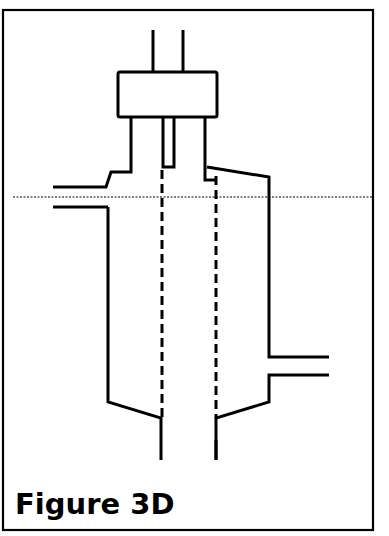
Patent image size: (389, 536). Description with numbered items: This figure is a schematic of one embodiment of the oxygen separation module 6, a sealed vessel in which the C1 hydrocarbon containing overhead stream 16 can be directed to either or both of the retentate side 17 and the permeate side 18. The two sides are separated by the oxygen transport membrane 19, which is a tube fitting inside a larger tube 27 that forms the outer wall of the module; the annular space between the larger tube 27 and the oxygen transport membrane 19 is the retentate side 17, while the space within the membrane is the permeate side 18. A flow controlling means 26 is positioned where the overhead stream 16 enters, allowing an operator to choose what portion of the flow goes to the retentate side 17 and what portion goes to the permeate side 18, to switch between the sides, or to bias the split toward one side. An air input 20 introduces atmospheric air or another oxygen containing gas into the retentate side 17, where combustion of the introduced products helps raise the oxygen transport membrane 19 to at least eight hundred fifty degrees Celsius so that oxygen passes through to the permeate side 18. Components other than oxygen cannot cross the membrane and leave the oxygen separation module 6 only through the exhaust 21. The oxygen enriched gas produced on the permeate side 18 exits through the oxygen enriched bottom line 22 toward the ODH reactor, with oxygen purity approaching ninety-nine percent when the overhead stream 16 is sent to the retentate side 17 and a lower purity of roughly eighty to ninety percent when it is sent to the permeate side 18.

The overhead stream 16 is at (152, 53).
The flow controlling means 26 is at (219, 106).
The air input 20 is at (92, 162).
The larger tube 27 is at (271, 221).
The oxygen transport membrane 19 is at (270, 267).
The exhaust 21 is at (275, 417).
The oxygen separation module 6 is at (85, 309).
The retentate side 17 is at (148, 267).
The permeate side 18 is at (268, 268).
The oxygen enriched bottom line 22 is at (237, 455).